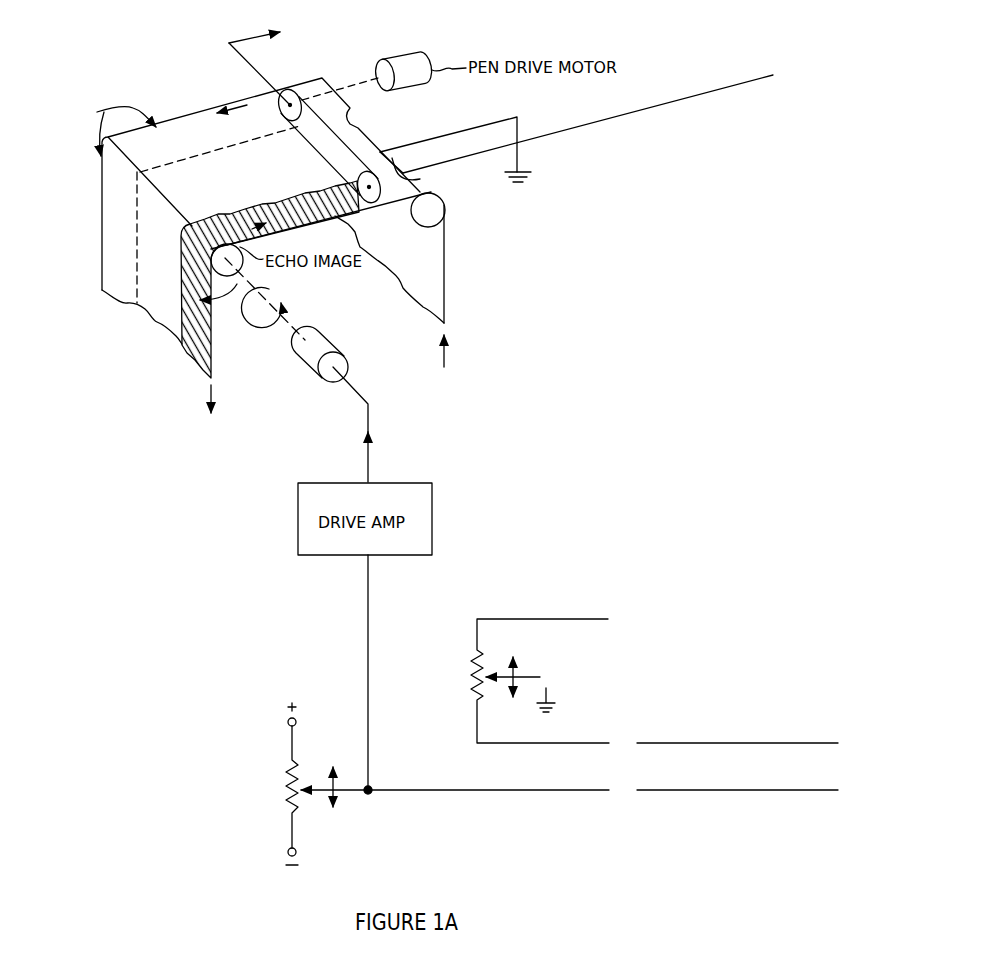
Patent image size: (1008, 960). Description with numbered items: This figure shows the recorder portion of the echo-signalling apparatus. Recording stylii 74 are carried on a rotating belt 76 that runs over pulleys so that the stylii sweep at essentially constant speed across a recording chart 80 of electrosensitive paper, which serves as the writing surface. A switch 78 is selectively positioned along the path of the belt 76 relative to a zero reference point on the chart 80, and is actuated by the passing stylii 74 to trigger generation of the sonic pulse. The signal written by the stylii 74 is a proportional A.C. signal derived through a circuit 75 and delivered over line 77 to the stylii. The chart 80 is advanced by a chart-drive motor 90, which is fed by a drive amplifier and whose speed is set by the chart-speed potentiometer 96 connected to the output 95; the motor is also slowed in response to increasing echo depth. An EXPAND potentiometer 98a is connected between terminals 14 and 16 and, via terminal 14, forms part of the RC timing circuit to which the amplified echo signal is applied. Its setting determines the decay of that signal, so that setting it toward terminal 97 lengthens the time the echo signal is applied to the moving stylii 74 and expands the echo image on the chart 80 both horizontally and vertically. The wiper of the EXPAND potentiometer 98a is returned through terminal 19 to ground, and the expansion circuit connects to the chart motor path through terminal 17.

The recording stylii 74 is at (350, 116).
The circuit 75 is at (293, 32).
The rotating belt 76 is at (311, 142).
The pen drive signal line 77 is at (241, 22).
The switch 78 is at (420, 179).
The recording chart 80 is at (218, 194).
The chart-drive motor 90 is at (323, 339).
The output 95 is at (634, 779).
The chart-speed potentiometer 96 is at (296, 812).
The terminal 97 is at (637, 741).
The EXPAND potentiometer 98a is at (468, 672).
The terminal 14 is at (622, 619).
The terminal 16 is at (623, 790).
The terminal 17 is at (623, 743).
The terminal 19 is at (551, 688).